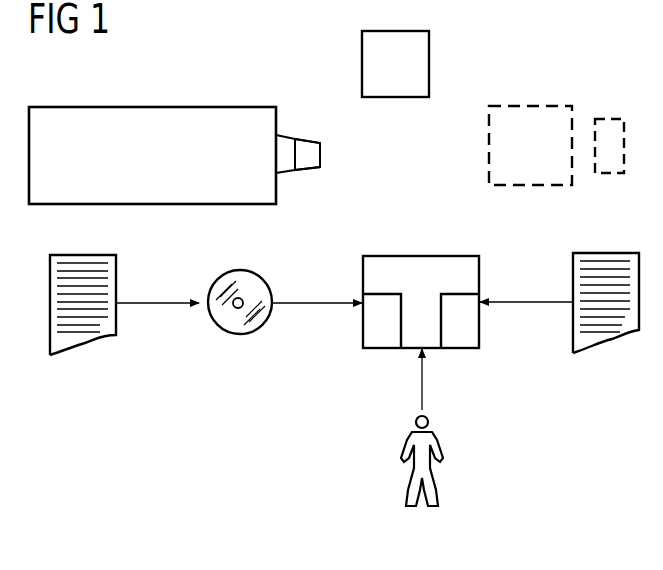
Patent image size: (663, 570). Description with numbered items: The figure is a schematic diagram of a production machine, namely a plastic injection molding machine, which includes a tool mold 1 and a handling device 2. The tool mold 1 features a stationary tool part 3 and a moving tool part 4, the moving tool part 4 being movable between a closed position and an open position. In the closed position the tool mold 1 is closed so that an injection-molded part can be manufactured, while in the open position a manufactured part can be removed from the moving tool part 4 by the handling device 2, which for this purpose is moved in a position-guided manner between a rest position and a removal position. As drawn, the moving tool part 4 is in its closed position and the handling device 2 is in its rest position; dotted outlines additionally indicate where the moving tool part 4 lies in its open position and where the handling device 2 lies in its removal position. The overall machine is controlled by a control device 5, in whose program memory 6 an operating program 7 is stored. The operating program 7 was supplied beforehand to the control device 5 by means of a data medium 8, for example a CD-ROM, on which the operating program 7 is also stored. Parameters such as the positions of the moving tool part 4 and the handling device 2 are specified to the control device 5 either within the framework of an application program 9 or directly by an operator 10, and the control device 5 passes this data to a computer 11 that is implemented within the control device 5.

The tool mold 1 is at (296, 127).
The handling device 2 is at (429, 52).
The stationary tool part 3 is at (288, 165).
The moving tool part 4 is at (310, 146).
The control device 5 is at (422, 256).
The program memory 6 is at (383, 343).
The operating program 7 is at (90, 340).
The data medium 8 is at (238, 334).
The application program 9 is at (612, 338).
The operator 10 is at (428, 440).
The computer 11 is at (465, 337).